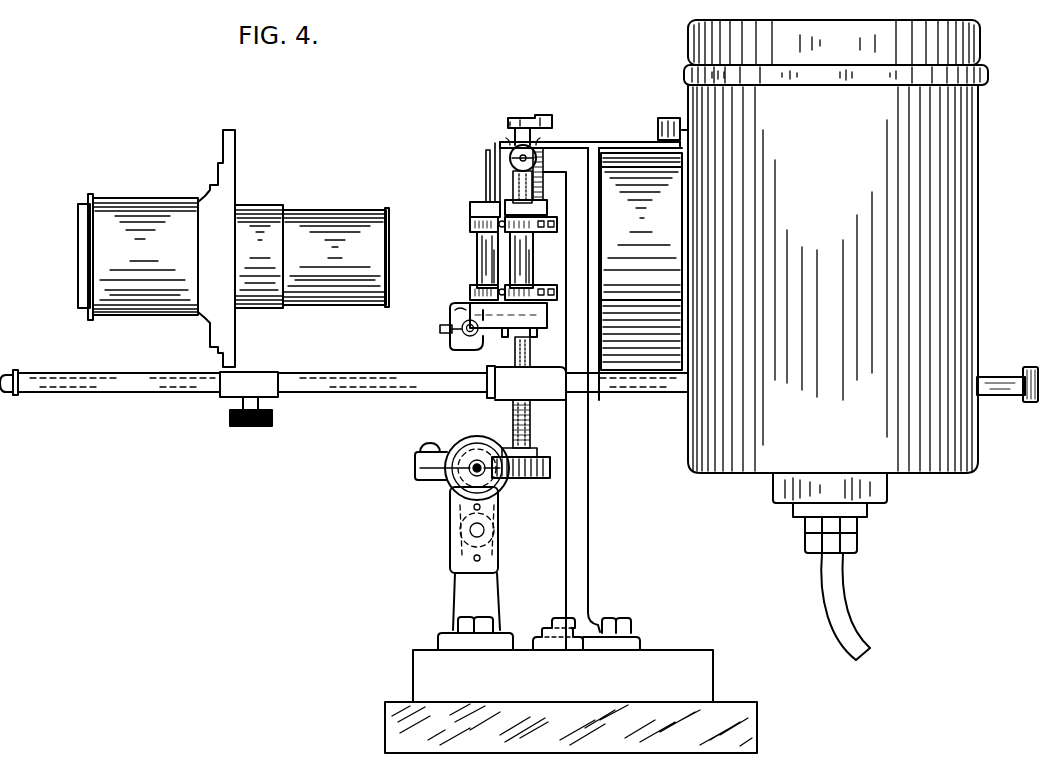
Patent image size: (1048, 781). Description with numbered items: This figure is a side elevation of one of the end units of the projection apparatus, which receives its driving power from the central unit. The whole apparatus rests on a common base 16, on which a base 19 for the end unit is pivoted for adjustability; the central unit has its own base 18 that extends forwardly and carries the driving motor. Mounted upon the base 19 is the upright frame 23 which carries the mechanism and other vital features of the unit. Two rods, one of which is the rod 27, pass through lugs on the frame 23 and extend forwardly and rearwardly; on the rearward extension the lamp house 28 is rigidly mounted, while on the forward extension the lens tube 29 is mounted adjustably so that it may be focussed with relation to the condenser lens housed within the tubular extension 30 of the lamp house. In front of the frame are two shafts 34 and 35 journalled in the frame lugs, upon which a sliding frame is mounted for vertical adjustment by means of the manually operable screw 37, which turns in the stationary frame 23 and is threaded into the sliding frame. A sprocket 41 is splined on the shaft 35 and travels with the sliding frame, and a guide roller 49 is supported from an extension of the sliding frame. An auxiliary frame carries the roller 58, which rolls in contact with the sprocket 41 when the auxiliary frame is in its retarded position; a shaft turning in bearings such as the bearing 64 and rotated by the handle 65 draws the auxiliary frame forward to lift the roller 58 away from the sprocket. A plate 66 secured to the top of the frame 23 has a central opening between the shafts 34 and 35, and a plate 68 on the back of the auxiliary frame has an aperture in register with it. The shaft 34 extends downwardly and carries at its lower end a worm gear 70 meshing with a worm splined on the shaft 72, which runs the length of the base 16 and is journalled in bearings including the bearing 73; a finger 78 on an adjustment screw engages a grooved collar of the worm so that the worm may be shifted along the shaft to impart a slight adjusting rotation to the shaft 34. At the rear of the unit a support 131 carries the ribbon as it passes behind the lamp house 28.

The base 16 is at (393, 718).
The base 18 is at (648, 77).
The base 19 is at (667, 660).
The upright frame 23 is at (587, 520).
The rod 27 is at (139, 393).
The lamp house 28 is at (936, 453).
The lens tube 29 is at (145, 245).
The tubular extension 30 is at (650, 335).
The shaft 34 is at (531, 433).
The shaft 35 is at (531, 409).
The manually operable screw 37 is at (546, 122).
The sprocket 41 is at (536, 272).
The guide roller 49 is at (524, 257).
The roller 58 is at (484, 257).
The bearing 64 is at (483, 346).
The handle 65 is at (440, 330).
The plate 66 is at (495, 148).
The plate 68 is at (486, 163).
The worm gear 70 is at (545, 478).
The shaft 72 is at (467, 471).
The bearing 73 is at (466, 580).
The finger 78 is at (495, 549).
The support 131 is at (1003, 375).